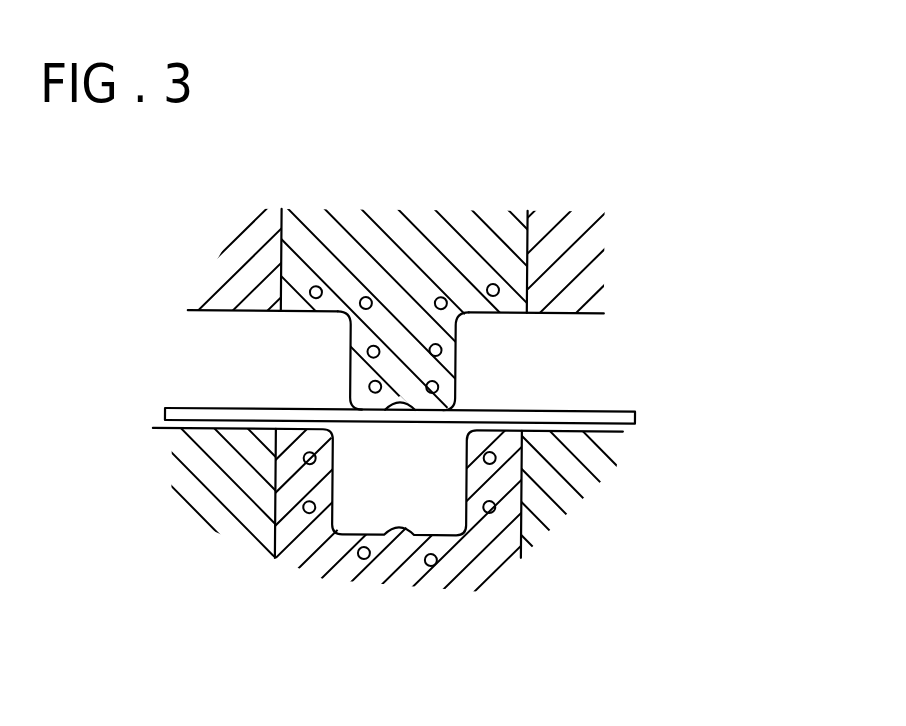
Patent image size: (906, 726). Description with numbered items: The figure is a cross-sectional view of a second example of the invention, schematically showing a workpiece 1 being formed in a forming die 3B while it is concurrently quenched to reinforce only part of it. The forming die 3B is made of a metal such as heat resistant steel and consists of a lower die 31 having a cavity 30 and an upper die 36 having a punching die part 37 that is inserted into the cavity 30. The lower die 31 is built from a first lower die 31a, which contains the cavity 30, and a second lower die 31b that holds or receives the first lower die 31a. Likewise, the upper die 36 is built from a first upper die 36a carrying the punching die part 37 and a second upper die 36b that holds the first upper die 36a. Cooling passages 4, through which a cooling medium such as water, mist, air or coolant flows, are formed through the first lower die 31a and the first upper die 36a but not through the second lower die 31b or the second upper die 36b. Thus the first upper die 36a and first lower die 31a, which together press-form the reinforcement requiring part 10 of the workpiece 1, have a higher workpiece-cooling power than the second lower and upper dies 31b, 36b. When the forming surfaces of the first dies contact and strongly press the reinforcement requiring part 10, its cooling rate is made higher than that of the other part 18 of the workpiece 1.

The workpiece 1 is at (646, 415).
The forming die 3B is at (640, 249).
The cooling passage 4 is at (314, 285).
The reinforcement requiring part 10 is at (324, 416).
The other part 18 is at (238, 416).
The cavity 30 is at (443, 518).
The lower die 31 is at (607, 504).
The first lower die 31a is at (502, 554).
The second lower die 31b is at (225, 497).
The upper die 36 is at (590, 298).
The first upper die 36a is at (443, 321).
The second upper die 36b is at (240, 289).
The punching die part 37 is at (440, 370).